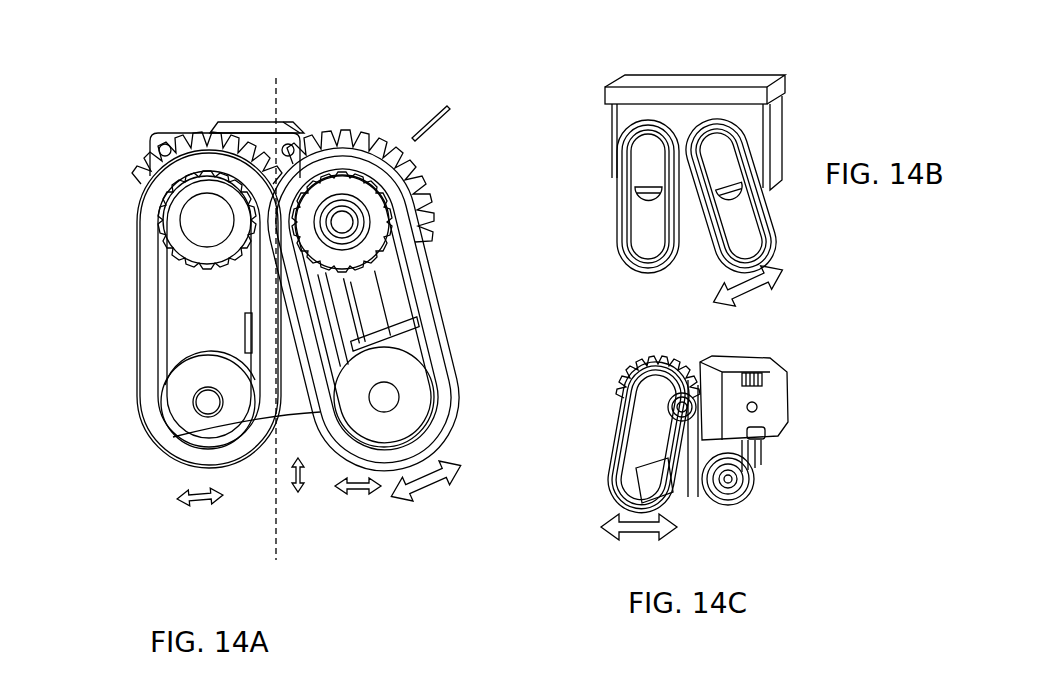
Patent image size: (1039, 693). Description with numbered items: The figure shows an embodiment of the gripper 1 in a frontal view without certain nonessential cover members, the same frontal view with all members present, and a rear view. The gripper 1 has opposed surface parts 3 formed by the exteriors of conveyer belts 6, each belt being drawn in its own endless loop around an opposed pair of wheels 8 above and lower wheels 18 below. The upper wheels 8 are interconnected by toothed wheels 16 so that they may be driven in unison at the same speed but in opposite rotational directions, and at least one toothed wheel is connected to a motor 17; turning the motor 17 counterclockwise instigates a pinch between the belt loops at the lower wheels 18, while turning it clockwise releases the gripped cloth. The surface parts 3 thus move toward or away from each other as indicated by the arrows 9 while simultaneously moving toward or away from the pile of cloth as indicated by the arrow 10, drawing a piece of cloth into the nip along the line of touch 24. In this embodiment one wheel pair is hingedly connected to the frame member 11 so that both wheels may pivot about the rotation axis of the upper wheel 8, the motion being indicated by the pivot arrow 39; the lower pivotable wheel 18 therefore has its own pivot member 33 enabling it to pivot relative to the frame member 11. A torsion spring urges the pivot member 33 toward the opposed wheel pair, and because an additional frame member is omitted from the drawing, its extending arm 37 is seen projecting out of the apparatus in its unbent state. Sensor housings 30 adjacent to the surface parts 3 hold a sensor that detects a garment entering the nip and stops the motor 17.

In FIG. 14A, the gripper 1 is at (468, 298).
In FIG. 14B, the gripper 1 is at (805, 129).
In FIG. 14C, the gripper 1 is at (814, 401).
In FIG. 14A, the surface parts 3 is at (178, 430).
In FIG. 14B, the surface parts 3 is at (710, 247).
In FIG. 14A, the conveyer belts 6 is at (138, 298).
In FIG. 14A, the wheels 8 is at (190, 214).
In FIG. 14A, the arrows 9 is at (195, 496).
In FIG. 14A, the arrow 10 is at (275, 480).
In FIG. 14B, the frame member 11 is at (705, 85).
In FIG. 14A, the toothed wheels 16 is at (190, 135).
In FIG. 14A, the motor 17 is at (238, 135).
In FIG. 14C, the motor 17 is at (735, 400).
In FIG. 14A, the lower wheels 18 is at (190, 407).
In FIG. 14C, the lower wheels 18 is at (612, 488).
In FIG. 14A, the line of touch 24 is at (278, 100).
In FIG. 14C, the sensor housings 30 is at (705, 490).
In FIG. 14A, the pivot member 33 is at (445, 345).
In FIG. 14C, the pivot member 33 is at (655, 450).
In FIG. 14A, the extending arm 37 is at (440, 117).
In FIG. 14C, the extending arm 37 is at (640, 362).
In FIG. 14A, the pivot arrow 39 is at (420, 493).
In FIG. 14B, the pivot arrow 39 is at (778, 290).
In FIG. 14C, the pivot arrow 39 is at (605, 548).